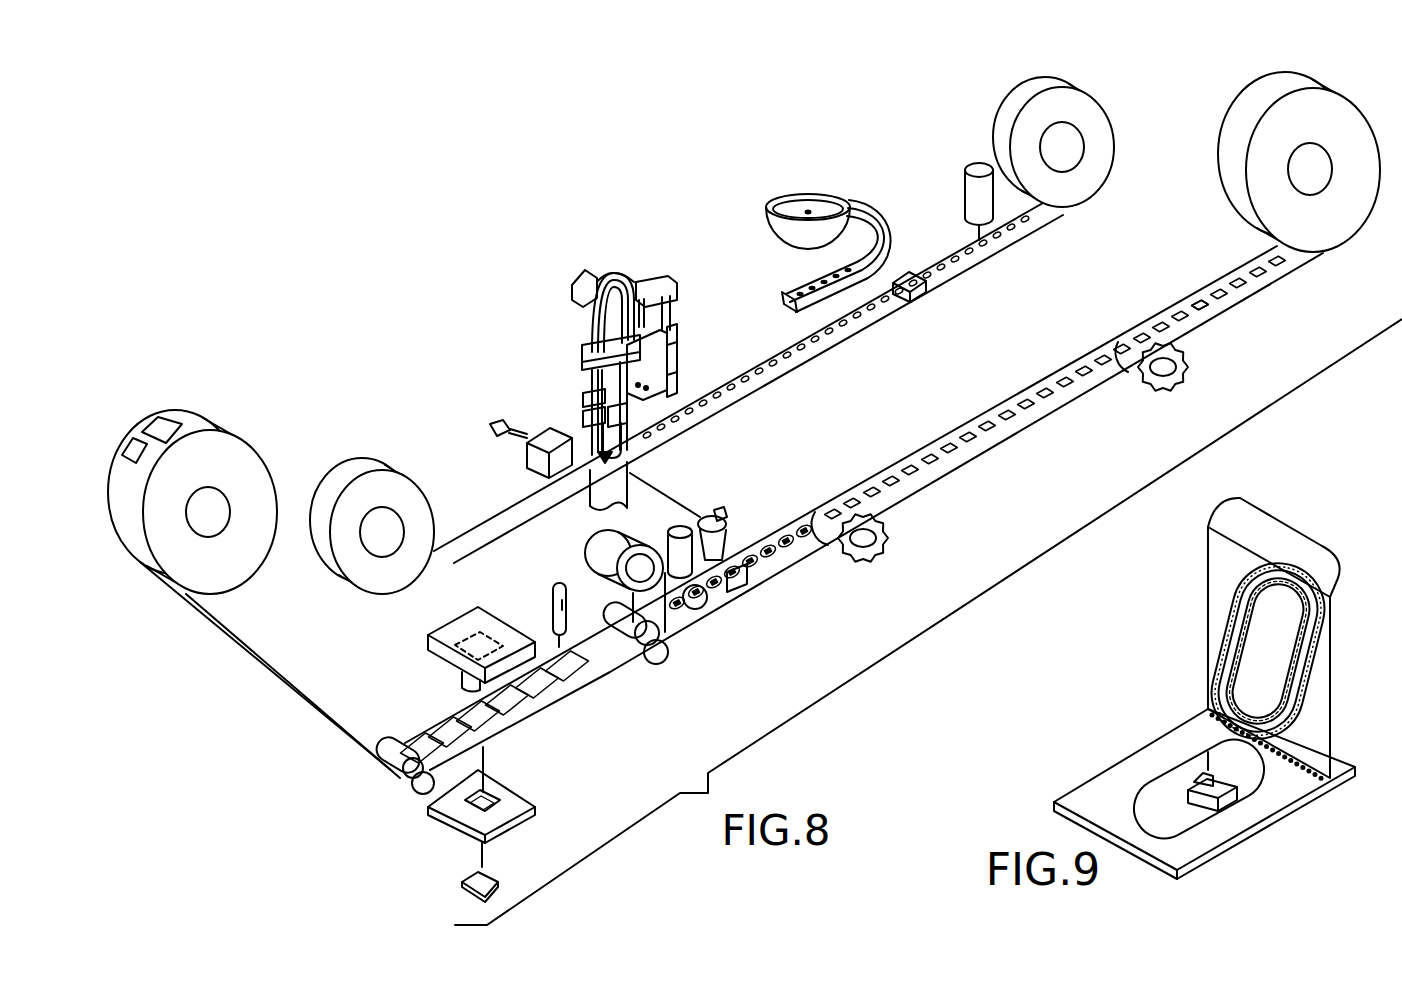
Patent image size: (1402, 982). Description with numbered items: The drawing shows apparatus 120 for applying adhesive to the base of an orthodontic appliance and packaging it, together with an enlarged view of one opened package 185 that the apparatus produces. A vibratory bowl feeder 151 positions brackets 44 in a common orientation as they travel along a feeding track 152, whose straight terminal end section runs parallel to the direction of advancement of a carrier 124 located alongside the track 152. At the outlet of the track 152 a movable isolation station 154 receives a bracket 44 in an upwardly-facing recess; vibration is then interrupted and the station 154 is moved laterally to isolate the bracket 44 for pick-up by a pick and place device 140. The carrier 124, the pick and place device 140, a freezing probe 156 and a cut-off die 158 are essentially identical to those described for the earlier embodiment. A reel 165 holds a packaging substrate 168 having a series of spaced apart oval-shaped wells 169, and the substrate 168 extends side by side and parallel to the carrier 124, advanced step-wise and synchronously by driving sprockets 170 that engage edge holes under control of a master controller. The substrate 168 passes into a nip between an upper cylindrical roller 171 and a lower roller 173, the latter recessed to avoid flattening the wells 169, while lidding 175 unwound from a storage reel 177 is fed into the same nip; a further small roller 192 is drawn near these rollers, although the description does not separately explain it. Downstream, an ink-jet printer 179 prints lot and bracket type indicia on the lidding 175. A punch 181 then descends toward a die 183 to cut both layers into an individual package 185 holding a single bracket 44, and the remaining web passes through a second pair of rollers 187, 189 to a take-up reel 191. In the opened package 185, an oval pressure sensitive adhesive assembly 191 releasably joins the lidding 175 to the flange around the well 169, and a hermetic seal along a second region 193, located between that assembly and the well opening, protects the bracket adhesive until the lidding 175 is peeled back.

In FIG. 8, the apparatus 120 is at (674, 205).
In FIG. 8, the carrier 124 is at (1012, 230).
In FIG. 8, the pick and place device 140 is at (562, 375).
In FIG. 8, the vibratory bowl feeder 151 is at (818, 202).
In FIG. 8, the feeding track 152 is at (795, 305).
In FIG. 8, the isolation station 154 is at (545, 437).
In FIG. 8, the freezing probe 156 is at (608, 508).
In FIG. 8, the cut-off die 158 is at (725, 540).
In FIG. 8, the reel 165 is at (1222, 147).
In FIG. 8, the packaging substrate 168 is at (1302, 258).
In FIG. 9, the packaging substrate 168 is at (1196, 848).
In FIG. 8, the wells 169 is at (1215, 290).
In FIG. 9, the wells 169 is at (1151, 795).
In FIG. 8, the driving sprockets 170 is at (895, 530).
In FIG. 8, the upper cylindrical roller 171 is at (668, 630).
In FIG. 8, the lower roller 173 is at (660, 668).
In FIG. 8, the lidding 175 is at (662, 622).
In FIG. 9, the lidding 175 is at (1208, 573).
In FIG. 8, the storage reel 177 is at (597, 557).
In FIG. 8, the ink-jet printer 179 is at (550, 600).
In FIG. 8, the punch 181 is at (462, 680).
In FIG. 8, the die 183 is at (520, 795).
In FIG. 8, the package 185 is at (495, 878).
In FIG. 9, the package 185 is at (1108, 666).
In FIG. 8, the roller 187 is at (395, 742).
In FIG. 8, the roller 189 is at (412, 788).
In FIG. 8, the take-up reel 191 is at (240, 450).
In FIG. 9, the take-up reel 191 is at (1230, 683).
In FIG. 8, the roller 192 is at (695, 607).
In FIG. 8, the second region 193 is at (722, 577).
In FIG. 9, the second region 193 is at (1240, 662).
In FIG. 8, the brackets 44 is at (820, 280).
In FIG. 9, the brackets 44 is at (1232, 800).